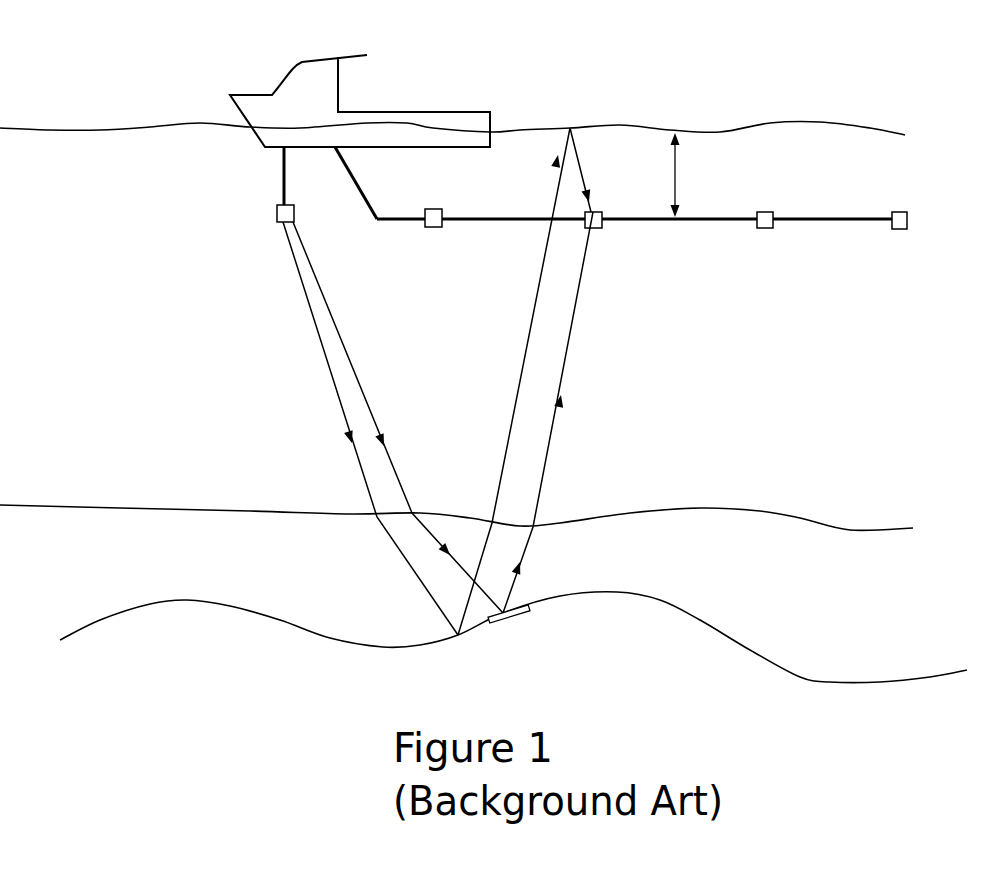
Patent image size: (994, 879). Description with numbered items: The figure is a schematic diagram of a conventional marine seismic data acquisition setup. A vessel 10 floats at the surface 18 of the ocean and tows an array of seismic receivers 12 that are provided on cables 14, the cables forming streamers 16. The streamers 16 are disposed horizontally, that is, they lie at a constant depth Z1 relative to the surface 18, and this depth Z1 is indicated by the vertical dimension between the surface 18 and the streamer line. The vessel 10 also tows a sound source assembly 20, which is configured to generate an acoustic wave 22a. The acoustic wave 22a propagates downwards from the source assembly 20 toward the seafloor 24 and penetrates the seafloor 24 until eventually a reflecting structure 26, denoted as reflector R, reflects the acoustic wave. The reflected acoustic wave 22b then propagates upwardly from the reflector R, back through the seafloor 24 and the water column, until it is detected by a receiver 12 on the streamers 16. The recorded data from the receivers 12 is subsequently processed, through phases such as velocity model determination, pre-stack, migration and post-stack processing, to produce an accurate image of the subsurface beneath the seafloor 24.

The vessel 10 is at (287, 90).
The seismic receivers 12 is at (433, 227).
The cables 14 is at (412, 222).
The streamers 16 is at (621, 245).
The surface 18 is at (617, 128).
The sound source assembly 20 is at (277, 211).
The acoustic wave 22a is at (348, 363).
The reflected acoustic wave 22b is at (548, 453).
The seafloor 24 is at (760, 512).
The reflecting structure 26 is at (800, 677).
The depth Z1 is at (677, 167).
The reflector R is at (505, 618).